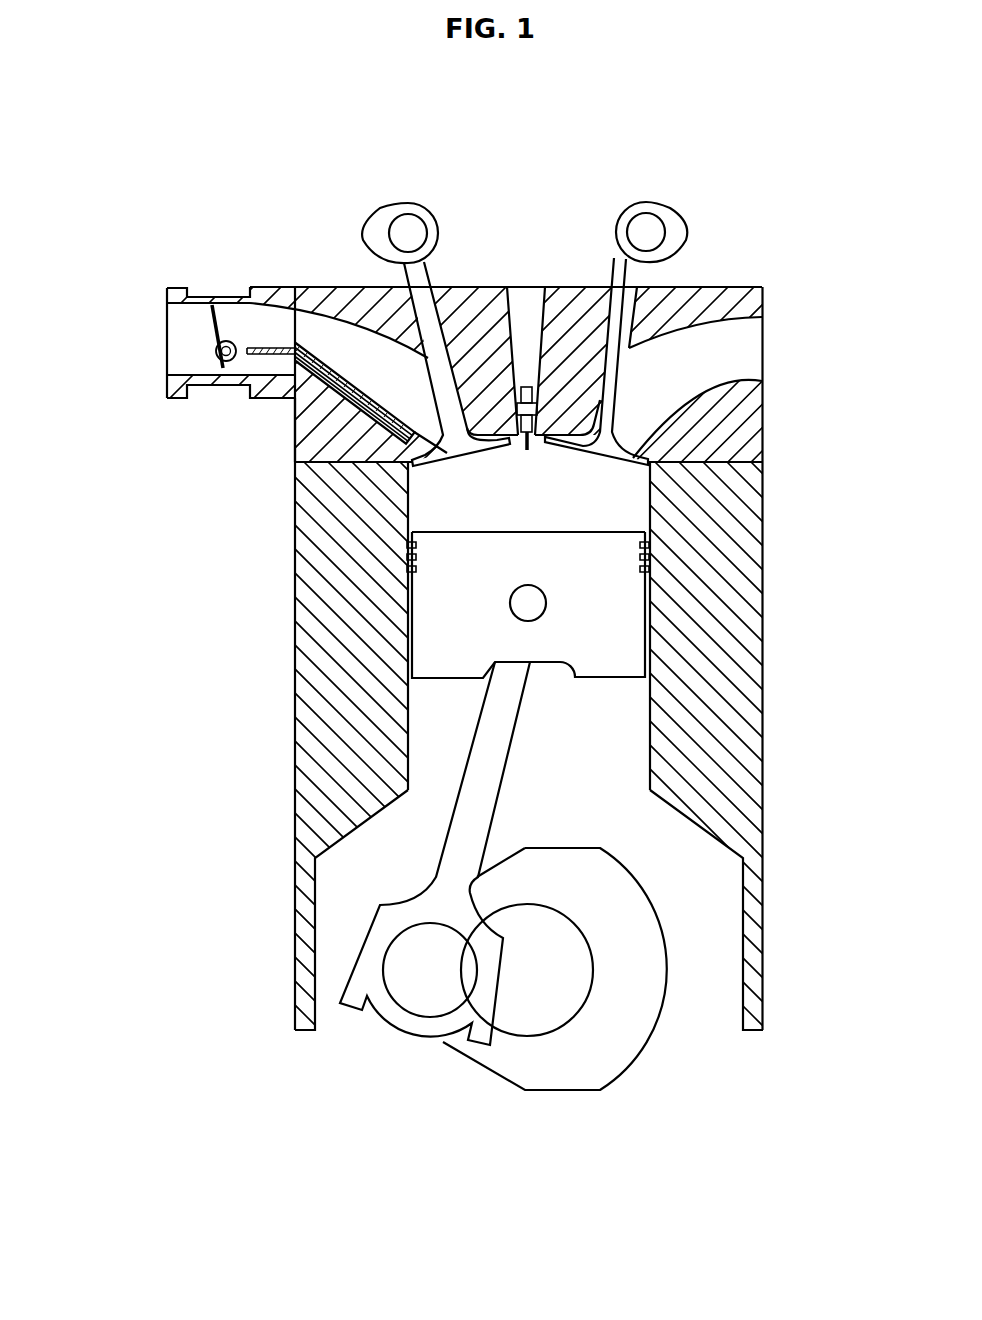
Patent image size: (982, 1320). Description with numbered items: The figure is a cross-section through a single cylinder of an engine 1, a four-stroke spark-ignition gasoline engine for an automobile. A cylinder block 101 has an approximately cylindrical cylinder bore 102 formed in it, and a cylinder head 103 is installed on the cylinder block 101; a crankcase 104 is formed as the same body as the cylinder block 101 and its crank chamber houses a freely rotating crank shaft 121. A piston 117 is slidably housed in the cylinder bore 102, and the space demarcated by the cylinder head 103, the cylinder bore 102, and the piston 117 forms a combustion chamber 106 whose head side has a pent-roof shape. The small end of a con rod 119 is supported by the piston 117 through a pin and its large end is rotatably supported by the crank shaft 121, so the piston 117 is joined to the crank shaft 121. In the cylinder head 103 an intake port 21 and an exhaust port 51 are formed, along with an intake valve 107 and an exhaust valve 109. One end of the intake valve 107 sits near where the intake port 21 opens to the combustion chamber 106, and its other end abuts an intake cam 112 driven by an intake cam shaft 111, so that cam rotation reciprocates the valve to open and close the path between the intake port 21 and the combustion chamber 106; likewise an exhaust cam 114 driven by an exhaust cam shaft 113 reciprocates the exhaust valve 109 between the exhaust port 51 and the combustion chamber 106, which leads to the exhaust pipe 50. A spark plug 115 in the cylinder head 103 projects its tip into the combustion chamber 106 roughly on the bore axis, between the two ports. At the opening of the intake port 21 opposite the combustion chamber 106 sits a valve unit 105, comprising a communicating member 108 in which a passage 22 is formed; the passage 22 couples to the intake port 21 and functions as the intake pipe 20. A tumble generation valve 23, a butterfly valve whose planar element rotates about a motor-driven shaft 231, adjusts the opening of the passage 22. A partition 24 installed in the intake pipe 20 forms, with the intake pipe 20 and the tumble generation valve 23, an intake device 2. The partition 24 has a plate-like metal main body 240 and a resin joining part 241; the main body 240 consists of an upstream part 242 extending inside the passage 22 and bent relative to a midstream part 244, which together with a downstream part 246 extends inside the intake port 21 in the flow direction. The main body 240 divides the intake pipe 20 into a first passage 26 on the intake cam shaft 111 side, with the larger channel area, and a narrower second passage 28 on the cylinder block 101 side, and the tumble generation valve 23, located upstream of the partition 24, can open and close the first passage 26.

The engine 1 is at (778, 192).
The intake device 2 is at (275, 360).
The intake pipe 20 is at (163, 339).
The intake port 21 is at (470, 410).
The passage 22 is at (168, 378).
The tumble generation valve 23 is at (214, 346).
The partition 24 is at (305, 342).
The first passage 26 is at (362, 362).
The second passage 28 is at (407, 466).
The exhaust pipe 50 is at (765, 346).
The exhaust port 51 is at (762, 381).
The cylinder block 101 is at (764, 600).
The cylinder bore 102 is at (640, 661).
The cylinder head 103 is at (764, 430).
The crankcase 104 is at (765, 826).
The valve unit 105 is at (172, 226).
The combustion chamber 106 is at (594, 531).
The intake valve 107 is at (460, 465).
The communicating member 108 is at (178, 286).
The exhaust valve 109 is at (600, 462).
The intake cam shaft 111 is at (387, 210).
The intake cam 112 is at (409, 204).
The exhaust cam shaft 113 is at (668, 208).
The exhaust cam 114 is at (648, 203).
The spark plug 115 is at (524, 385).
The piston 117 is at (495, 532).
The con rod 119 is at (471, 742).
The crank shaft 121 is at (650, 898).
The shaft 231 is at (221, 306).
The main body 240 is at (272, 436).
The joining part 241 is at (336, 346).
The upstream part 242 is at (272, 357).
The midstream part 244 is at (340, 394).
The downstream part 246 is at (392, 437).